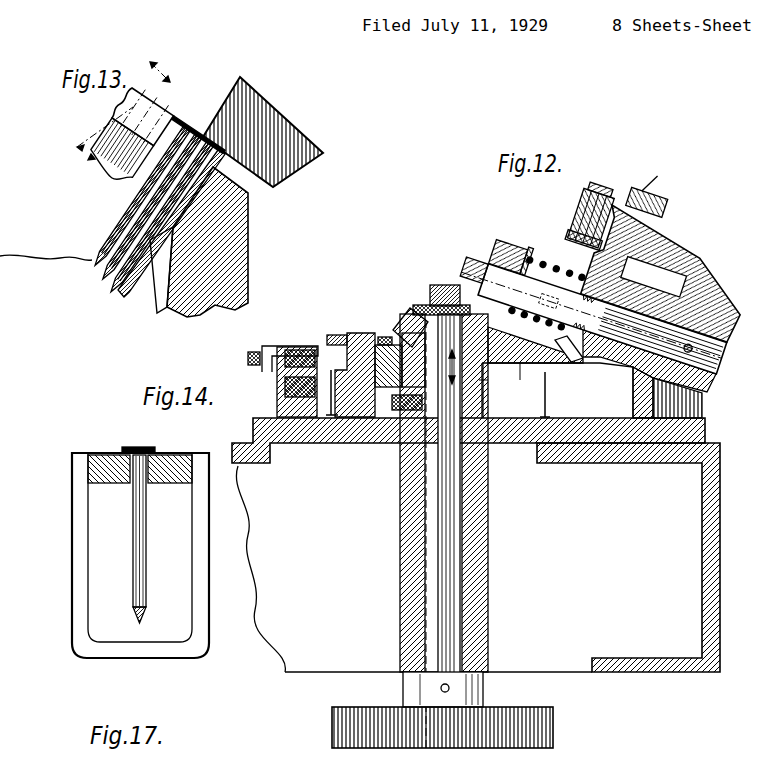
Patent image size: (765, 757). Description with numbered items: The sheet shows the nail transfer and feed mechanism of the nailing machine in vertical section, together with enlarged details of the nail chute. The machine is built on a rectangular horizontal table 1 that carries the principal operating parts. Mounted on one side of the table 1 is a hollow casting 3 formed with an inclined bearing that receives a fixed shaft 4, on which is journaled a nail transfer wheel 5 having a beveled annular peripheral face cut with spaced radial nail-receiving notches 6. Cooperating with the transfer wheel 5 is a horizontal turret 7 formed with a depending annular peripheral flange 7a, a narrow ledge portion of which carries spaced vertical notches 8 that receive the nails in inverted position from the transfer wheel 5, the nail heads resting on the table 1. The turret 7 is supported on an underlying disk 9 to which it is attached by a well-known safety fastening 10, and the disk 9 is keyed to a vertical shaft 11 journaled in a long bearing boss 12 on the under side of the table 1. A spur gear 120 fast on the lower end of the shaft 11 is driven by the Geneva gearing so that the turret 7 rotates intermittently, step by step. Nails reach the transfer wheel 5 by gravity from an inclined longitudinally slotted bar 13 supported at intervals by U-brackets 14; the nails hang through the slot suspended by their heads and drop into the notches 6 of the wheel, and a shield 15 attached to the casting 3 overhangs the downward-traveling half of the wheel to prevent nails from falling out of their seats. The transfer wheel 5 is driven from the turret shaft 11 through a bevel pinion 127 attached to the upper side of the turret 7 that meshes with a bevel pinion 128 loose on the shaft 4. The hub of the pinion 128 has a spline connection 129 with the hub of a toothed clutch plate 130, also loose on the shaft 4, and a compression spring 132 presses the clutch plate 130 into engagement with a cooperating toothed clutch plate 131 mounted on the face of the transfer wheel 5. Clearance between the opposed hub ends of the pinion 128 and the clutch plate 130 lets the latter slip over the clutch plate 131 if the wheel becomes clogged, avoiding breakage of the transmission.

In FIG. 12, the table 1 is at (347, 432).
In FIG. 12, the hollow casting 3 is at (704, 410).
In FIG. 12, the fixed shaft 4 is at (610, 284).
In FIG. 13, the nail transfer wheel 5 is at (240, 263).
In FIG. 12, the nail transfer wheel 5 is at (673, 265).
In FIG. 13, the nail-receiving notches 6 is at (160, 250).
In FIG. 12, the nail-receiving notches 6 is at (613, 174).
In FIG. 12, the horizontal turret 7 is at (497, 348).
In FIG. 12, the depending annular peripheral flange 7a is at (528, 385).
In FIG. 12, the vertical notches 8 is at (535, 404).
In FIG. 12, the disk 9 is at (478, 397).
In FIG. 12, the safety fastening 10 is at (383, 340).
In FIG. 12, the vertical shaft 11 is at (443, 516).
In FIG. 12, the bearing boss 12 is at (410, 535).
In FIG. 13, the longitudinally slotted bar 13 is at (152, 110).
In FIG. 14, the longitudinally slotted bar 13 is at (109, 478).
In FIG. 12, the longitudinally slotted bar 13 is at (599, 193).
In FIG. 13, the U-brackets 14 is at (100, 197).
In FIG. 14, the U-brackets 14 is at (192, 568).
In FIG. 12, the U-brackets 14 is at (581, 209).
In FIG. 13, the shield 15 is at (199, 127).
In FIG. 12, the shield 15 is at (551, 268).
In FIG. 12, the spur gear 120 is at (553, 716).
In FIG. 12, the bevel pinion 127 is at (405, 315).
In FIG. 12, the bevel pinion 128 is at (502, 238).
In FIG. 12, the spline connection 129 is at (564, 244).
In FIG. 12, the toothed clutch plate 130 is at (554, 276).
In FIG. 12, the toothed clutch plate 131 is at (662, 253).
In FIG. 12, the compression spring 132 is at (550, 236).